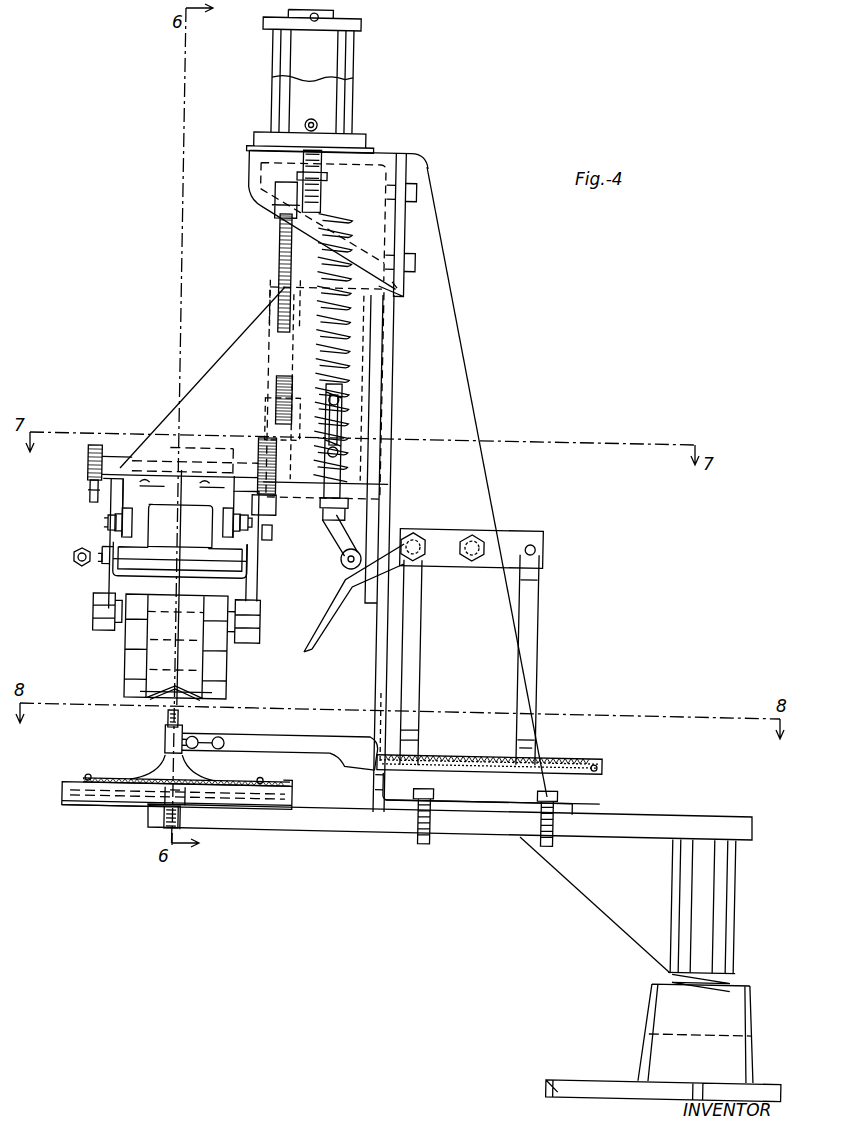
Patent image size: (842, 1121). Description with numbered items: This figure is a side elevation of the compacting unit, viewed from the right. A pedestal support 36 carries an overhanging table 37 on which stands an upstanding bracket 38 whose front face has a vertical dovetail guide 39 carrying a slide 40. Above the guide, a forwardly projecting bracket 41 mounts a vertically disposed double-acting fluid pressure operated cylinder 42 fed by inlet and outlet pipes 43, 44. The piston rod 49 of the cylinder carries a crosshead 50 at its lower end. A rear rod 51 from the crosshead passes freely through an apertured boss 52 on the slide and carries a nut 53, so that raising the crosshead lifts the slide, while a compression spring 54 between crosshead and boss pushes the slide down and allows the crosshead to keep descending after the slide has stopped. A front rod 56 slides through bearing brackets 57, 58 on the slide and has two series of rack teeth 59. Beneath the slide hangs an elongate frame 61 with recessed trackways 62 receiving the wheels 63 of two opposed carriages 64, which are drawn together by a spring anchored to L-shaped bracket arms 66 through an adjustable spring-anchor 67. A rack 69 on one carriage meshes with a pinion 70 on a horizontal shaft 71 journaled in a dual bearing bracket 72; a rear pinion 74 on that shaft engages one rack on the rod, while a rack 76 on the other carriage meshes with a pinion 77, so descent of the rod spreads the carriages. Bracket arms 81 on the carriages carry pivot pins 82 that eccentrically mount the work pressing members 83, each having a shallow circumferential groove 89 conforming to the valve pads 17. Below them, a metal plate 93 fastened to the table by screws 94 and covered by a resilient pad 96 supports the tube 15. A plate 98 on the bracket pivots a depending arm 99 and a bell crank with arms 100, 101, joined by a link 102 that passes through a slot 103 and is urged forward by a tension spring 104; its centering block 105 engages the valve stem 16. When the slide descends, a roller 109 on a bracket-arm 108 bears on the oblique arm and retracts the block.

The tube 15 is at (86, 777).
The valve stem 16 is at (165, 752).
The valve pad 17 is at (135, 778).
The pedestal support 36 is at (718, 925).
The overhanging table 37 is at (350, 832).
The upstanding bracket 38 is at (375, 682).
The vertical dovetail guide 39 is at (370, 604).
The slide 40 is at (246, 326).
The forwardly projecting bracket 41 is at (385, 160).
The fluid pressure operated cylinder 42 is at (272, 60).
The inlet and outlet pipe 43 is at (318, 124).
The inlet and outlet pipe 44 is at (316, 20).
The piston rod 49 is at (300, 165).
The crosshead 50 is at (275, 208).
The rod 51 is at (342, 258).
The apertured boss 52 is at (286, 495).
The nut 53 is at (345, 500).
The compression spring 54 is at (386, 288).
The rod 56 is at (279, 228).
The bearing bracket 57 is at (278, 262).
The bearing bracket 58 is at (268, 410).
The rack teeth 59 is at (276, 380).
The elongate frame 61 is at (165, 510).
The recessed trackway 62 is at (108, 528).
The wheel 63 is at (115, 514).
The carriage 64 is at (127, 562).
The L-shaped bracket arm 66 is at (90, 568).
The adjustable spring-anchor 67 is at (72, 555).
The rack 69 is at (88, 488).
The pinion 70 is at (88, 452).
The horizontal shaft 71 is at (205, 448).
The dual bearing bracket 72 is at (130, 457).
The pinion 74 is at (278, 510).
The rack 76 is at (268, 540).
The pinion 77 is at (262, 448).
The bracket arm 81 is at (93, 610).
The pivot pin 82 is at (147, 650).
The work pressing member 83 is at (230, 663).
The circumferential groove 89 is at (150, 700).
The metal plate 93 is at (72, 808).
The screw 94 is at (150, 812).
The pad 96 is at (62, 796).
The plate 98 is at (518, 533).
The depending arm 99 is at (538, 622).
The bell crank arm 100 is at (421, 644).
The bell crank arm 101 is at (347, 607).
The link 102 is at (440, 756).
The slot 103 is at (375, 785).
The tension spring 104 is at (572, 758).
The centering block 105 is at (168, 726).
The bracket-arm 108 is at (355, 520).
The roller 109 is at (340, 563).